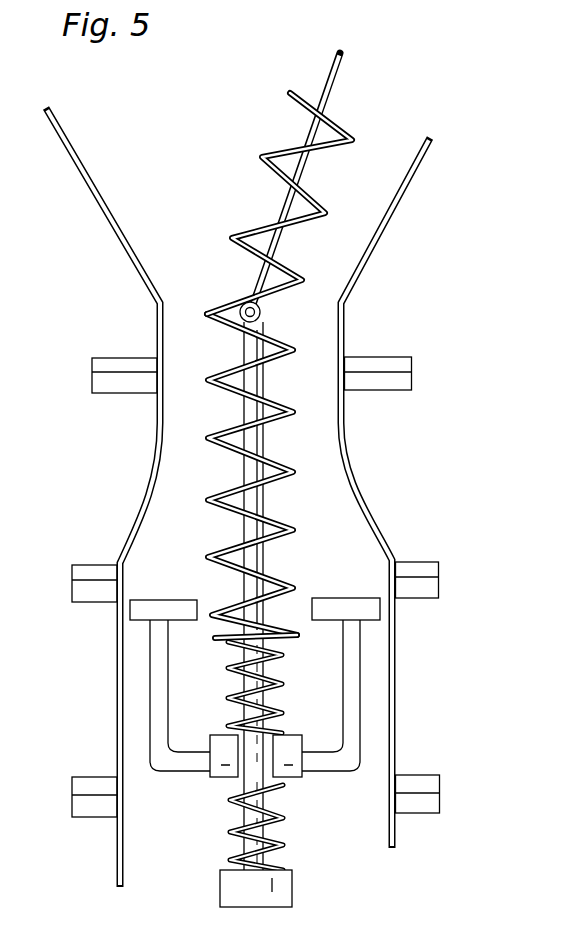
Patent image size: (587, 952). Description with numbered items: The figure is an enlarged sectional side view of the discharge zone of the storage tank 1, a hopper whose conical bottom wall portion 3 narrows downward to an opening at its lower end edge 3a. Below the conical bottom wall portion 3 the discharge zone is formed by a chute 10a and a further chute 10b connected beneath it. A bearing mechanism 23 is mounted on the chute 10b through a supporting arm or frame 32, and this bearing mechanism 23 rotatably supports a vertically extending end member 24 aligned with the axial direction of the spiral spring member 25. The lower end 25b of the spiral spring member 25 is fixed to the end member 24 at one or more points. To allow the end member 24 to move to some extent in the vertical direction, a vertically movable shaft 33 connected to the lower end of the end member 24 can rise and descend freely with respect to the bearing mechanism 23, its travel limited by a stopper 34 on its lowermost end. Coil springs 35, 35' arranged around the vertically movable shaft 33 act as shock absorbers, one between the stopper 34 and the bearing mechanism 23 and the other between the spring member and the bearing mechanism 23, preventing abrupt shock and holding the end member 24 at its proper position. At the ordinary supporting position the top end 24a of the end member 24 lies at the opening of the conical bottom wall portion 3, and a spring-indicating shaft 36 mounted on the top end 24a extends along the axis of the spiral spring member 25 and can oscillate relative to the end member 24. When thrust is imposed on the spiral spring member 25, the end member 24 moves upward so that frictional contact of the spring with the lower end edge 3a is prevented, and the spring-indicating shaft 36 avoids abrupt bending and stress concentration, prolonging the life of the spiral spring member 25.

The storage tank 1 is at (438, 171).
The conical bottom wall portion 3 is at (397, 212).
The lower end edge of conical bottom wall portion 3a is at (156, 312).
The chute 10a is at (348, 425).
The chute 10b is at (397, 660).
The bearing mechanism 23 is at (212, 741).
The end member 24 is at (288, 497).
The top end of end member 24a is at (262, 320).
The spiral spring member 25 is at (271, 151).
The lower end of spiral spring member 25b is at (220, 640).
The supporting arm or frame 32 is at (342, 772).
The vertically movable shaft 33 is at (270, 832).
The stopper 34 is at (288, 893).
The coil spring 35 is at (279, 687).
The coil spring 35' is at (225, 827).
The spring-indicating shaft 36 is at (346, 79).